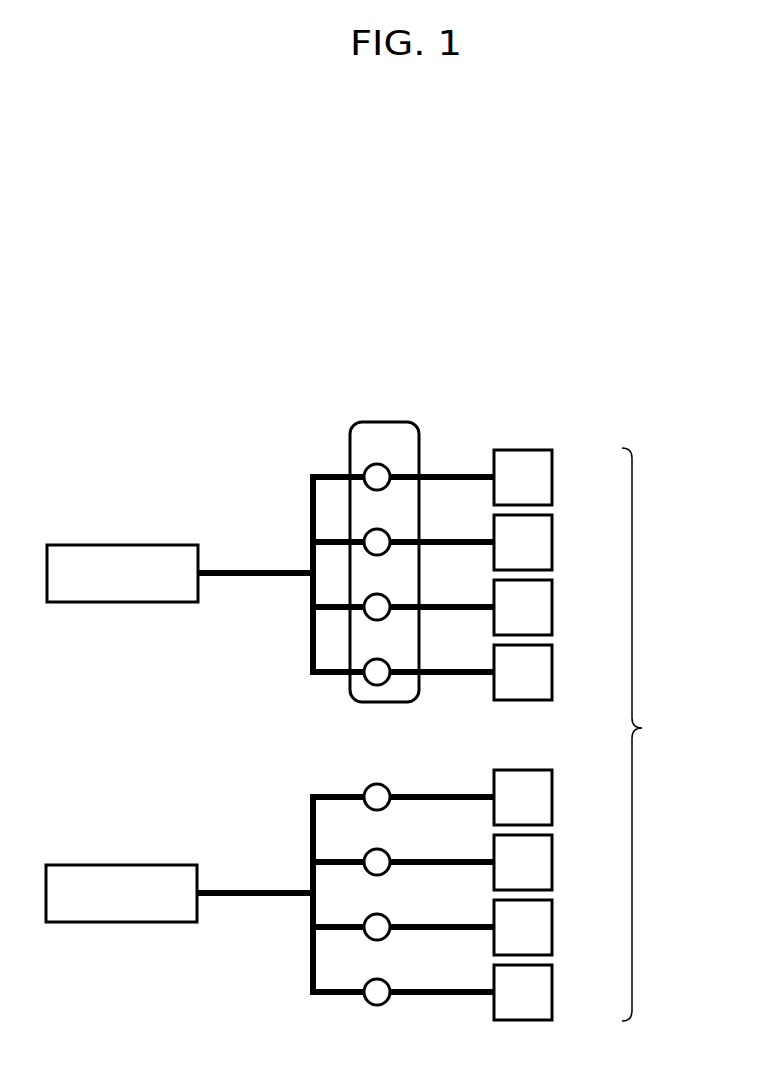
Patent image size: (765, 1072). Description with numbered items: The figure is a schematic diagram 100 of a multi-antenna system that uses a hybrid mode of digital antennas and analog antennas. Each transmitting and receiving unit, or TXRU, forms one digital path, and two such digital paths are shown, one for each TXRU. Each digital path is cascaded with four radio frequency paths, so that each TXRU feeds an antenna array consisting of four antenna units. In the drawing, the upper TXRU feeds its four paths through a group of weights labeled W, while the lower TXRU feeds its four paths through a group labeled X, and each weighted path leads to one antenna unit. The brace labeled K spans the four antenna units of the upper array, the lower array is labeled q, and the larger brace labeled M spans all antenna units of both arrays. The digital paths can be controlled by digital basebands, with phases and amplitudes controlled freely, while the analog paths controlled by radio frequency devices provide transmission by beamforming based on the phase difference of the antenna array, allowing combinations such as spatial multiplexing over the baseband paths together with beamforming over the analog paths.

The schematic diagram 100 is at (570, 356).
The first weight vector / phase shifter group W is at (400, 555).
The second weight vector / phase shifter group X is at (400, 867).
The number of antenna elements per TXRU K is at (558, 450).
The antenna element sub-array q is at (548, 846).
The total number of antenna elements M is at (646, 734).